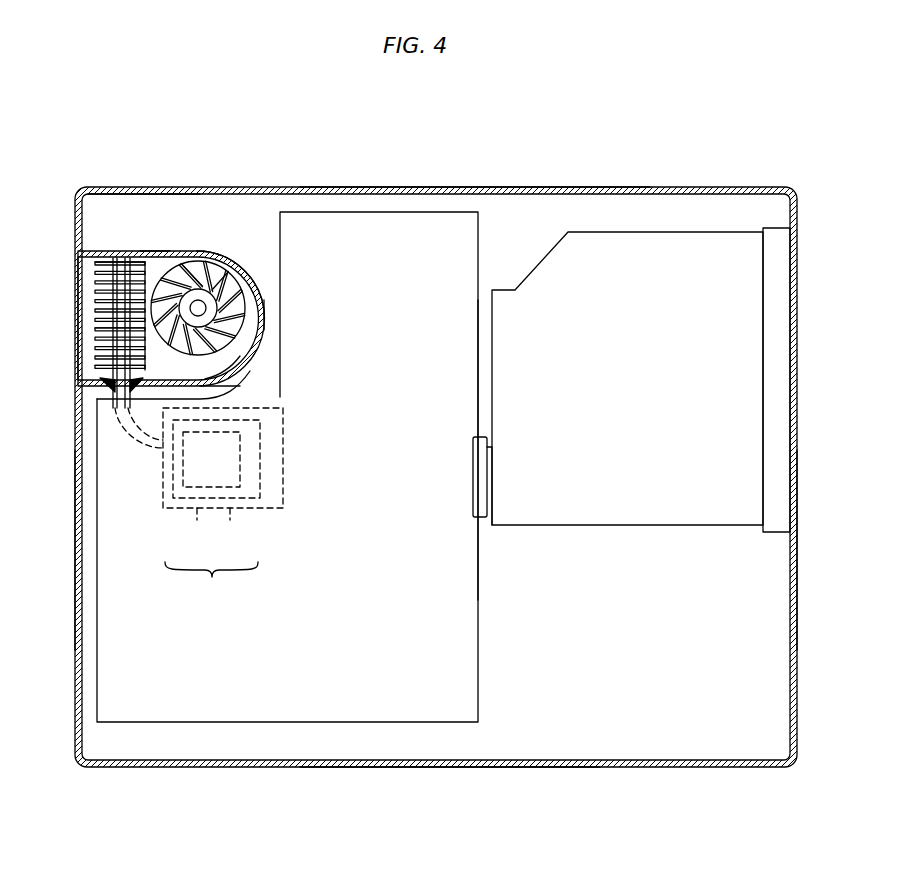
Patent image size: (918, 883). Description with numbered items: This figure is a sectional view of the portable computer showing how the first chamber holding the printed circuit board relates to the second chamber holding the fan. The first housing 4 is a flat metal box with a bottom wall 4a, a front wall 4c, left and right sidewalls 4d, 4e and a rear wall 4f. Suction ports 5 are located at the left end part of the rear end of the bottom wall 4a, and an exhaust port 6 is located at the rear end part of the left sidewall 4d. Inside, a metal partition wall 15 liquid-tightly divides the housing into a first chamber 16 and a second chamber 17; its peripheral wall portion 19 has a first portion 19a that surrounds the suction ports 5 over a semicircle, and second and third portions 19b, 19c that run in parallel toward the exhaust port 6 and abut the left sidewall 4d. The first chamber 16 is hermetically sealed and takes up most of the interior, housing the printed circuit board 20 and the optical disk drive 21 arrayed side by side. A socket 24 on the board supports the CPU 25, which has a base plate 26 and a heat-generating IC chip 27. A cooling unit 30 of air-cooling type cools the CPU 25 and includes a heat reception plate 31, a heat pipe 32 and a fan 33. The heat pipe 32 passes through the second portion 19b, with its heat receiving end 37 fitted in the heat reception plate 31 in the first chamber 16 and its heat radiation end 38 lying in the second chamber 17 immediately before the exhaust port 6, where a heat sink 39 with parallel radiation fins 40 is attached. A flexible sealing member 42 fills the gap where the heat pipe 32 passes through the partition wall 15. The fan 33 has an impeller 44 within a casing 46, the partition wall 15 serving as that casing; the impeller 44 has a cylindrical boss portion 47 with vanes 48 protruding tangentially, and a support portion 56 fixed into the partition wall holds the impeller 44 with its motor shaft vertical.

The first housing 4 is at (120, 769).
The bottom wall 4a is at (105, 211).
The front wall 4c is at (480, 768).
The left sidewall 4d is at (78, 557).
The right sidewall 4e is at (800, 565).
The rear wall 4f is at (476, 187).
The suction ports 5 is at (198, 300).
The exhaust port 6 is at (78, 325).
The partition wall 15 is at (244, 279).
The first chamber 16 is at (615, 583).
The second chamber 17 is at (157, 373).
The peripheral wall portion 19 is at (223, 254).
The first portion 19a is at (265, 308).
The second portion 19b is at (215, 382).
The third portion 19c is at (154, 251).
The printed circuit board 20 is at (465, 657).
The optical disk drive 21 is at (685, 510).
The socket 24 is at (283, 493).
The CPU 25 is at (211, 582).
The base plate 26 is at (197, 508).
The IC chip 27 is at (230, 508).
The cooling unit 30 is at (130, 246).
The heat reception plate 31 is at (262, 432).
The heat pipe 32 is at (138, 452).
The fan 33 is at (246, 298).
The heat receiving end 37 is at (242, 458).
The heat radiation end 38 is at (113, 288).
The heat sink 39 is at (103, 262).
The radiation fins 40 is at (97, 363).
The sealing member 42 is at (113, 385).
The impeller 44 is at (249, 331).
The casing 46 is at (255, 352).
The boss portion 47 is at (256, 268).
The vanes 48 is at (190, 270).
The support portion 56 is at (216, 292).